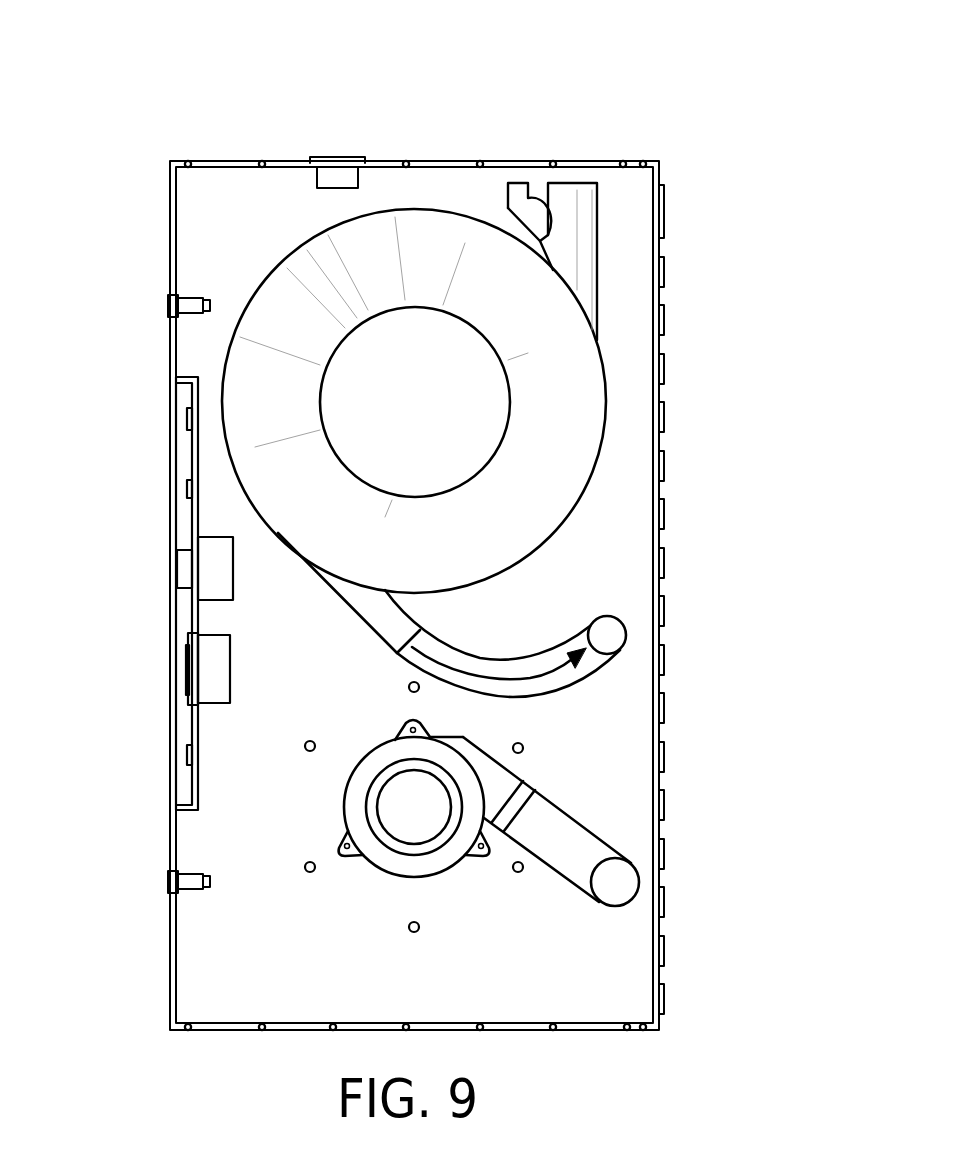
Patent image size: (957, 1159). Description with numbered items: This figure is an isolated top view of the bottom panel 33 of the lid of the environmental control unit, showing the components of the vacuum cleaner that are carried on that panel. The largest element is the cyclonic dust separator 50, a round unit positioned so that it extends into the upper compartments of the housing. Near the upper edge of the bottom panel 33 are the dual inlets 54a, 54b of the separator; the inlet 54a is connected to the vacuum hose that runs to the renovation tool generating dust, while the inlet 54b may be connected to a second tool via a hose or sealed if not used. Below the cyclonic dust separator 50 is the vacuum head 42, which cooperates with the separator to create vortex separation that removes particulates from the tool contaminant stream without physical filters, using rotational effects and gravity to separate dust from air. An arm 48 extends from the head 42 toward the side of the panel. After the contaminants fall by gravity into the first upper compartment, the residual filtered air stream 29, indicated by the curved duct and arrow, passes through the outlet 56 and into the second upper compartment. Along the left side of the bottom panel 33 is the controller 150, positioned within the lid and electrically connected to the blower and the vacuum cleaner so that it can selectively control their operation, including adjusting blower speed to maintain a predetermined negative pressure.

The bottom panel 33 is at (638, 136).
The cyclonic dust separator 50 is at (257, 292).
The inlet 54a is at (512, 191).
The inlet 54b is at (580, 222).
The controller 150 is at (167, 607).
The filtered air stream 29 is at (540, 673).
The outlet 56 is at (627, 645).
The head 42 is at (345, 800).
The arm 48 is at (562, 810).